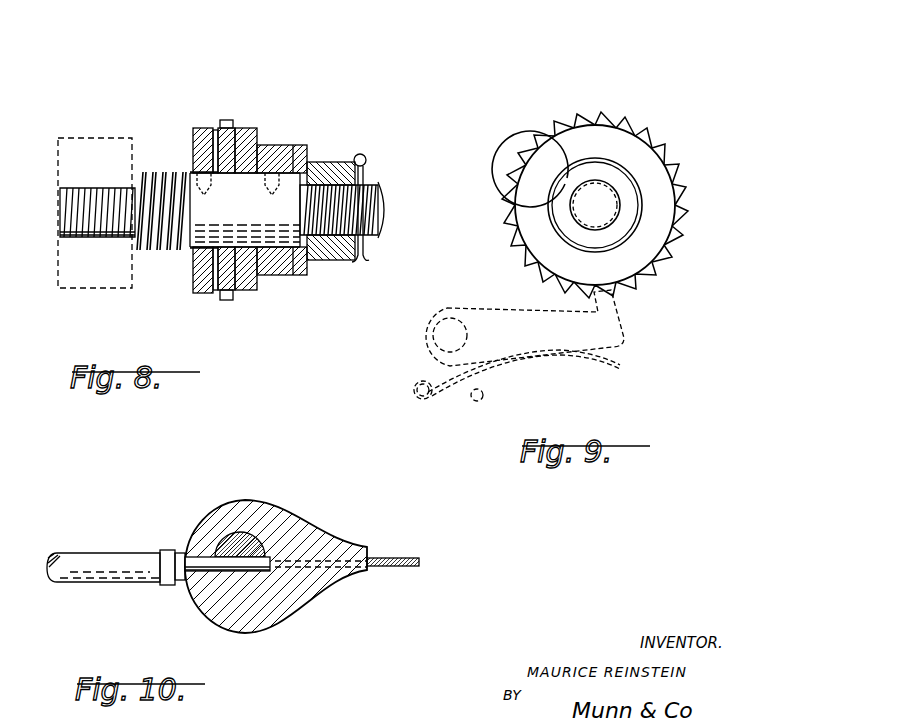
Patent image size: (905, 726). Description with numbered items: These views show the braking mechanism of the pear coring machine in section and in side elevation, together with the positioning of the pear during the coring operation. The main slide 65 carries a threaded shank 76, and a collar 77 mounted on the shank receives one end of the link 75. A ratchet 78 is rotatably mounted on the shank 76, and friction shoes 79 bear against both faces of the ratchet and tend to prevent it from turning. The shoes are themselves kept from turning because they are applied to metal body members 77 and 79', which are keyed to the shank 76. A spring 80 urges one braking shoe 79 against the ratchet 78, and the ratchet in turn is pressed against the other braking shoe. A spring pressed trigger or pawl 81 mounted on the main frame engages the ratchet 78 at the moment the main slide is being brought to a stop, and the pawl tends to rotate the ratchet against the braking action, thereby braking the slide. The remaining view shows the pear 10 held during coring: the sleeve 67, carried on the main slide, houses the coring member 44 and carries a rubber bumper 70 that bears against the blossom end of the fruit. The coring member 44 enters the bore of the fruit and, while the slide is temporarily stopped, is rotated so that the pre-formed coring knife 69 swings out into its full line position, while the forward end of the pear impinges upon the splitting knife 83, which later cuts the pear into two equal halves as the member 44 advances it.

In FIG. 8, the main slide 65 is at (75, 143).
In FIG. 8, the spring 80 is at (160, 178).
In FIG. 9, the spring 80 is at (632, 192).
In FIG. 8, the shank 76 is at (190, 257).
In FIG. 9, the shank 76 is at (582, 210).
In FIG. 8, the metal body member 79' is at (189, 195).
In FIG. 8, the ratchet 78 is at (228, 122).
In FIG. 9, the ratchet 78 is at (645, 135).
In FIG. 8, the friction shoes 79 is at (235, 314).
In FIG. 8, the collar 77 is at (245, 128).
In FIG. 8, the link 75 is at (283, 147).
In FIG. 9, the spring pressed trigger or pawl 81 is at (620, 330).
In FIG. 10, the handle body 10 is at (298, 530).
In FIG. 10, the coring knife 69 is at (245, 545).
In FIG. 10, the coring member 44 is at (190, 585).
In FIG. 10, the sleeve 67 is at (82, 553).
In FIG. 10, the rubber bumper 70 is at (185, 553).
In FIG. 10, the splitting knife 83 is at (400, 558).